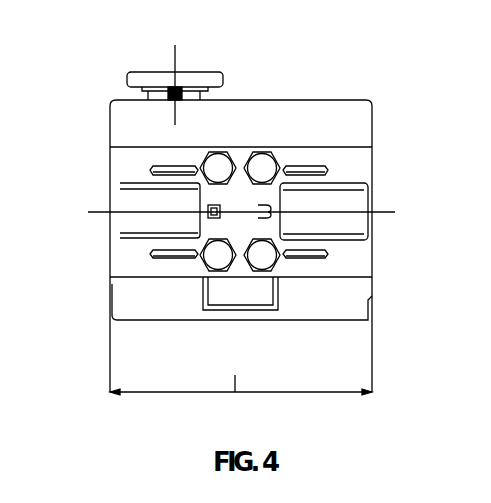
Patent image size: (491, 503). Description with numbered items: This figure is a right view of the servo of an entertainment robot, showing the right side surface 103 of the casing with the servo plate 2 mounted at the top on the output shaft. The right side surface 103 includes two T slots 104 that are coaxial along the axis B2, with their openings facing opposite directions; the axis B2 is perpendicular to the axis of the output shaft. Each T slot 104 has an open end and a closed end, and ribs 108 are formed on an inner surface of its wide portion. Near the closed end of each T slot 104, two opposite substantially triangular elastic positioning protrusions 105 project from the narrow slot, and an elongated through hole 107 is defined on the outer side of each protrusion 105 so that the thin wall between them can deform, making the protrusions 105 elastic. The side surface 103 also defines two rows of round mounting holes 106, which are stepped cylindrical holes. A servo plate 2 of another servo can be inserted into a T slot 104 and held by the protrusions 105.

The servo plate 2 is at (197, 75).
The right side surface 103 is at (342, 166).
The T slot 104 is at (148, 203).
The elastic positioning protrusion 105 is at (308, 240).
The round mounting hole 106 is at (258, 252).
The elongated through hole 107 is at (312, 256).
The rib 108 is at (150, 237).
The axis of the T slots of the right side surface B2 is at (125, 222).